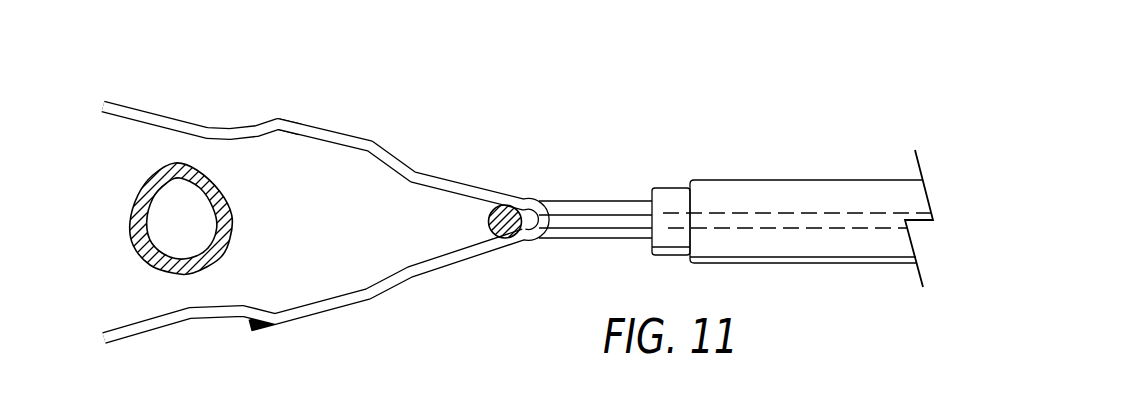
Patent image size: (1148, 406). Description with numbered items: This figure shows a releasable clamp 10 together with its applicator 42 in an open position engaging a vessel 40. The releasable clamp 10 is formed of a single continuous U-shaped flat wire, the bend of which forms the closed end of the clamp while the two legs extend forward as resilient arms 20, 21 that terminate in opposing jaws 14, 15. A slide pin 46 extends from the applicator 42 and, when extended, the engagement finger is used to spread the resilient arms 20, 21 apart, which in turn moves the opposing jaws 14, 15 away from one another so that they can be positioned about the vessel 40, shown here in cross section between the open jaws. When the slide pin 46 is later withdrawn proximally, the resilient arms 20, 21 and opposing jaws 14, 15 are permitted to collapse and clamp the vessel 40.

The releasable clamp 10 is at (518, 211).
The opposing jaw 14 is at (183, 120).
The opposing jaw 15 is at (162, 330).
The resilient arm 20 is at (452, 178).
The resilient arm 21 is at (447, 265).
The vessel 40 is at (133, 211).
The applicator 42 is at (727, 183).
The slide pin 46 is at (578, 217).